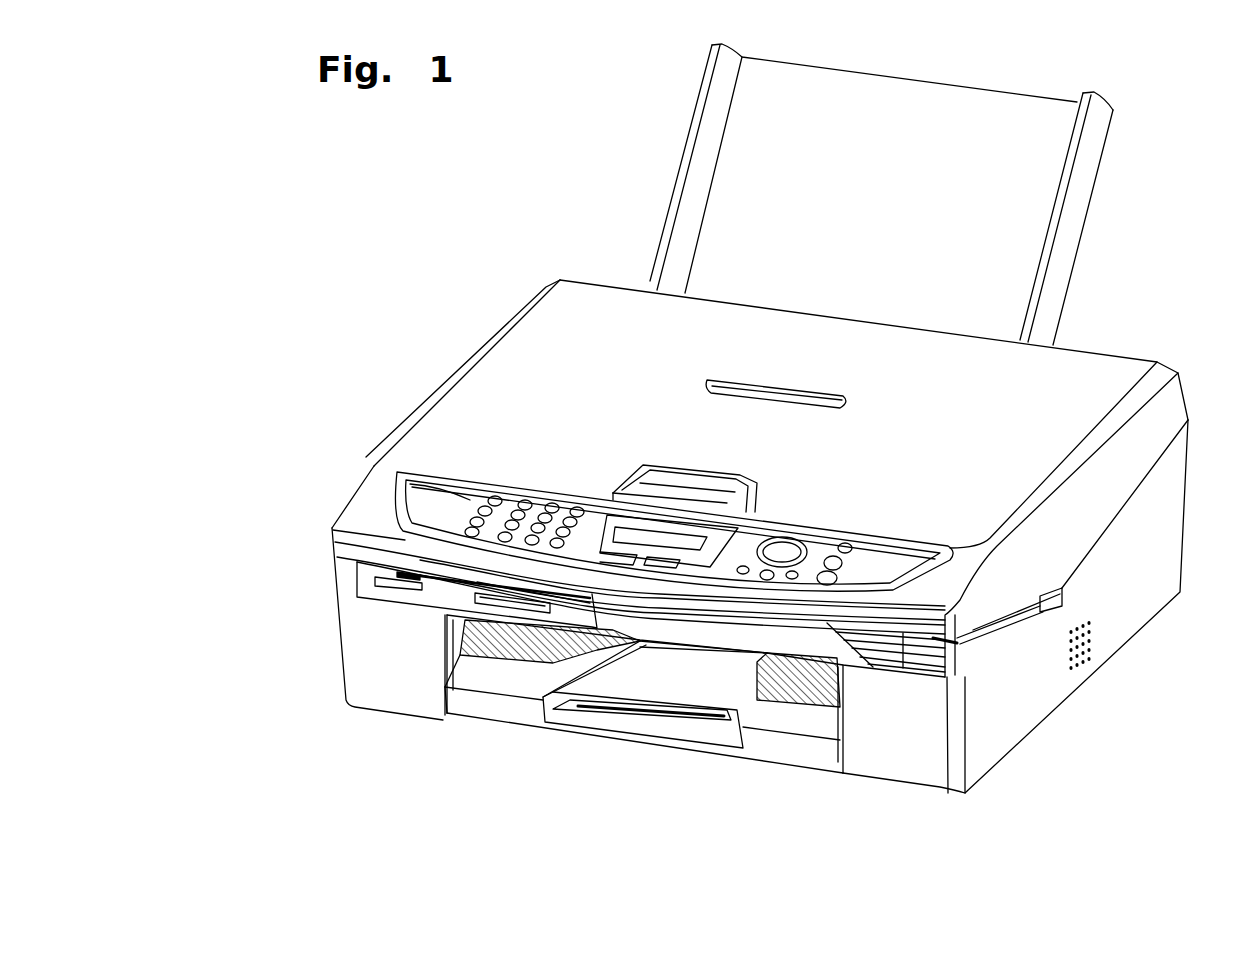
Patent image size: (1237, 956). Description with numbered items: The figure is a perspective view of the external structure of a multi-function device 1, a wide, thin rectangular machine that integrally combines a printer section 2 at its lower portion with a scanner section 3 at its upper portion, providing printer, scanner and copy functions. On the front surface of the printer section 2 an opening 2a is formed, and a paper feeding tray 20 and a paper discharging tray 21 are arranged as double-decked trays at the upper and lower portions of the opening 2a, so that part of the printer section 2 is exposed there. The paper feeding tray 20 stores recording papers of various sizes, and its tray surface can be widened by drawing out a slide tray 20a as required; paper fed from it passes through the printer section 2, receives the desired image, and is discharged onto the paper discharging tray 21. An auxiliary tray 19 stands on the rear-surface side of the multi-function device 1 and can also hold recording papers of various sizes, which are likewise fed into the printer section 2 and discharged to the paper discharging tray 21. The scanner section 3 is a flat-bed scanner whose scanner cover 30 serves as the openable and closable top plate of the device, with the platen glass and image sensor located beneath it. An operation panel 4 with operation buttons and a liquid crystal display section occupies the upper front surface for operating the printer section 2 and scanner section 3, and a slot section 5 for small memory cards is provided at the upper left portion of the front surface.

The multi-function device 1 is at (307, 748).
The printer section 2 is at (315, 658).
The opening 2a is at (490, 678).
The scanner section 3 is at (485, 325).
The operation panel 4 is at (430, 502).
The slot section 5 is at (362, 582).
The auxiliary tray 19 is at (1083, 173).
The paper feeding tray 20 is at (792, 750).
The slide tray 20a is at (647, 723).
The paper discharging tray 21 is at (520, 667).
The scanner cover 30 is at (618, 320).